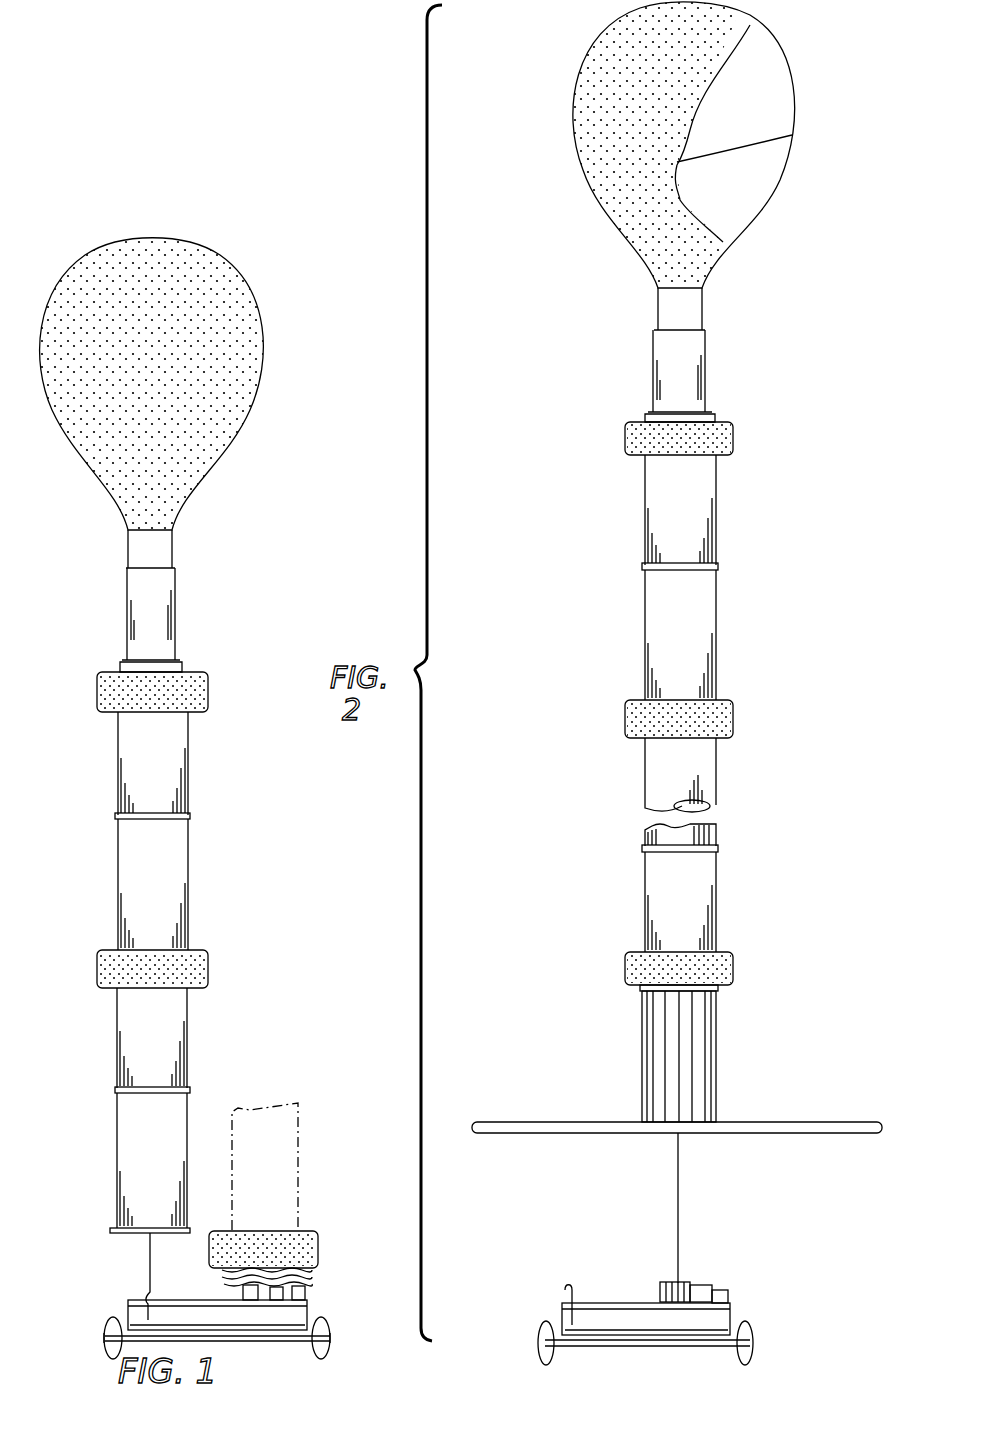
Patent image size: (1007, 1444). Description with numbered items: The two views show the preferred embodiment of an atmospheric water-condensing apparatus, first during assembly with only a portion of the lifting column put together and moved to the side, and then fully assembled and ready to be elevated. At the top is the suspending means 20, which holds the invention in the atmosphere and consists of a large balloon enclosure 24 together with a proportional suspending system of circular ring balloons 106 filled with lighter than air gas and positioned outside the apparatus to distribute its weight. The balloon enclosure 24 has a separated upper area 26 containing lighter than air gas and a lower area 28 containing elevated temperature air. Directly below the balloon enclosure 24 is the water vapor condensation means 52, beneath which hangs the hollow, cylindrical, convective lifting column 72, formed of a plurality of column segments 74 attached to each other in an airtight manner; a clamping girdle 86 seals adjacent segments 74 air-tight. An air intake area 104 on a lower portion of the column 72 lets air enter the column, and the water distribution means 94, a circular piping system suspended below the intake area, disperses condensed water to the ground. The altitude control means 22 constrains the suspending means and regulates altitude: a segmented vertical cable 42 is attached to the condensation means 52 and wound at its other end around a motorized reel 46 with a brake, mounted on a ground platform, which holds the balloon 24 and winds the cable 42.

In FIG. 1, the suspending means 20 is at (172, 364).
In FIG. 2, the suspending means 20 is at (666, 150).
In FIG. 1, the altitude control means 22 is at (305, 1292).
In FIG. 2, the altitude control means 22 is at (725, 1290).
In FIG. 1, the balloon enclosure 24 is at (232, 268).
In FIG. 2, the balloon enclosure 24 is at (636, 240).
In FIG. 2, the upper area 26 is at (767, 92).
In FIG. 2, the lower area 28 is at (742, 190).
In FIG. 1, the vertical cable 42 is at (150, 1255).
In FIG. 2, the vertical cable 42 is at (678, 1230).
In FIG. 1, the motorized reel 46 is at (255, 1292).
In FIG. 2, the motorized reel 46 is at (660, 1290).
In FIG. 1, the water vapor condensation means 52 is at (178, 620).
In FIG. 2, the water vapor condensation means 52 is at (655, 372).
In FIG. 1, the convective lifting column 72 is at (118, 915).
In FIG. 2, the convective lifting column 72 is at (716, 640).
In FIG. 1, the column segments 74 is at (190, 782).
In FIG. 2, the column segments 74 is at (645, 522).
In FIG. 1, the clamping girdle 86 is at (118, 815).
In FIG. 2, the clamping girdle 86 is at (718, 565).
In FIG. 2, the water distribution means 94 is at (575, 1122).
In FIG. 2, the air intake area 104 is at (716, 1064).
In FIG. 1, the circular ring balloons 106 is at (97, 688).
In FIG. 2, the circular ring balloons 106 is at (733, 440).